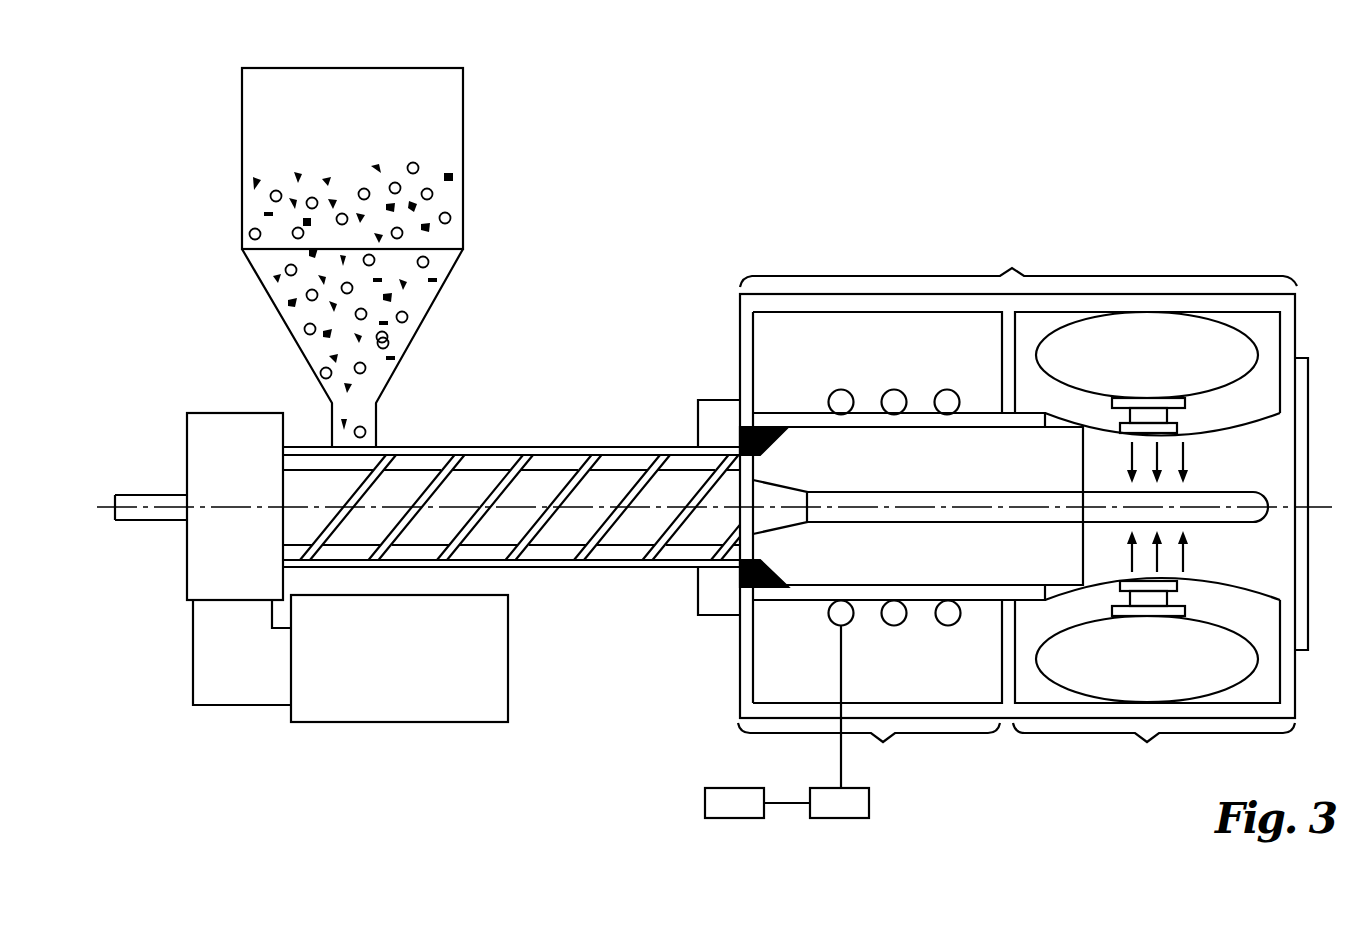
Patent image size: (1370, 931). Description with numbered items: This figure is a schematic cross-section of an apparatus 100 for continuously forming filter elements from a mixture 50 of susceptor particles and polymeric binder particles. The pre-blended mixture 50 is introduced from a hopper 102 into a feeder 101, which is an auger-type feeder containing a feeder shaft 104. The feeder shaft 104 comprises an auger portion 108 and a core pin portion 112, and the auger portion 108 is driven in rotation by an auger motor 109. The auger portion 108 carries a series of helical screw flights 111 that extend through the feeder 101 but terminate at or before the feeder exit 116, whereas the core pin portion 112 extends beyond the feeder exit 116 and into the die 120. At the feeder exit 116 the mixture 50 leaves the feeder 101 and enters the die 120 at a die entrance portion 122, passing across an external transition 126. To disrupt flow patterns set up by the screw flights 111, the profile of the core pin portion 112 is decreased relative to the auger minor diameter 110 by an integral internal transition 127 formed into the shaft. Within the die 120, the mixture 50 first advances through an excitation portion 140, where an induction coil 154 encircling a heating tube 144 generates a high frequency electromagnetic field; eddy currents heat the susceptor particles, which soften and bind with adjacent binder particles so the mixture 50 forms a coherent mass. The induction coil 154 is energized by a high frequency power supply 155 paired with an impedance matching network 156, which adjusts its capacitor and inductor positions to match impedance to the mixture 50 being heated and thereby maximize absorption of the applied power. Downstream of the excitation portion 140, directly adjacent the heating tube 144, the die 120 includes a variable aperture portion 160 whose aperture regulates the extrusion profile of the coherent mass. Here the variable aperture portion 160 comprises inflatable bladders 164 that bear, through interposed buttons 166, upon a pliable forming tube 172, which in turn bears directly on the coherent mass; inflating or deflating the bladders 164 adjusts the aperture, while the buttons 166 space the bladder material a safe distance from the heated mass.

The mixture 50 is at (253, 203).
The apparatus 100 is at (1265, 199).
The feeder 101 is at (496, 447).
The hopper 102 is at (465, 153).
The feeder shaft 104 is at (578, 537).
The auger portion 108 is at (617, 537).
The auger motor 109 is at (387, 710).
The auger minor diameter 110 is at (687, 545).
The screw flights 111 is at (520, 547).
The core pin portion 112 is at (915, 491).
The feeder exit 116 is at (735, 574).
The die 120 is at (1024, 480).
The die entrance portion 122 is at (787, 428).
The external transition 126 is at (745, 427).
The internal transition 127 is at (778, 490).
The excitation portion 140 is at (870, 541).
The heating tube 144 is at (981, 594).
The induction coil 154 is at (946, 390).
The high frequency power supply 155 is at (722, 793).
The impedance matching network 156 is at (862, 807).
The variable aperture portion 160 is at (1154, 541).
The bladders 164 is at (1128, 673).
The buttons 166 is at (1167, 598).
The forming tube 172 is at (1258, 417).